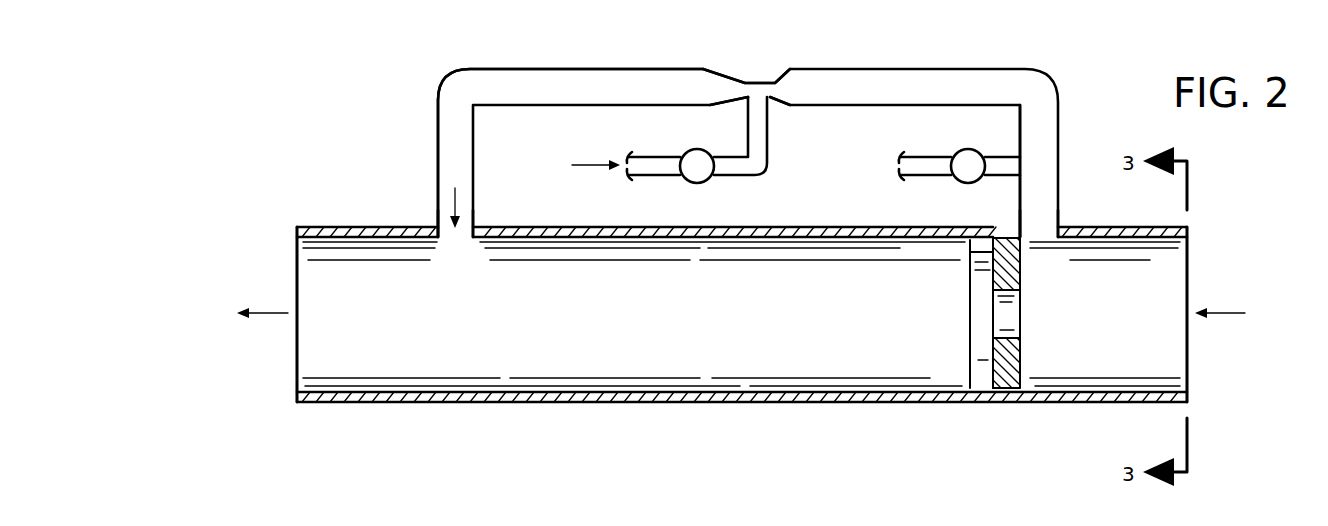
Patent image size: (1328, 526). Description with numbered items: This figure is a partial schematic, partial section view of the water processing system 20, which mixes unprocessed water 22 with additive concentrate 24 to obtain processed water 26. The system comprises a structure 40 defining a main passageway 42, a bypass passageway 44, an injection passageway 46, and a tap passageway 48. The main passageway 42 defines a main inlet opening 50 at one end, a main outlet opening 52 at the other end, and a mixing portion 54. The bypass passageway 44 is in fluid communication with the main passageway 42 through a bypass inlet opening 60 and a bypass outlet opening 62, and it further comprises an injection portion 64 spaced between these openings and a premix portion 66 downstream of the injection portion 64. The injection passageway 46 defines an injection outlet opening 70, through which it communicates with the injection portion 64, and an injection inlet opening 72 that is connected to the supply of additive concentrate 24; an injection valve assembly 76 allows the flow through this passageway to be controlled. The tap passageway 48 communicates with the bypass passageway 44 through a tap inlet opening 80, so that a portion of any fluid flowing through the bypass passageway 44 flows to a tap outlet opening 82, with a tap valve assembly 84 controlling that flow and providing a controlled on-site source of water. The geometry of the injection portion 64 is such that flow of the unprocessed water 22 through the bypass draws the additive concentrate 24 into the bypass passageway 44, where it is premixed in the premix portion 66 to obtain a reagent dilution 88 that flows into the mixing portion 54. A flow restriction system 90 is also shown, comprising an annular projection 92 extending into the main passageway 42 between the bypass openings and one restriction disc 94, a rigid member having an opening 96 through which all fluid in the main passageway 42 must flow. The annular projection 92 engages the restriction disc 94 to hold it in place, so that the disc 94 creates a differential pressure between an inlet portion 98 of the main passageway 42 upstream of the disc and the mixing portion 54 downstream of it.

The water processing system 20 is at (360, 123).
The unprocessed water 22 is at (1240, 313).
The additive concentrate 24 is at (578, 165).
The processed water 26 is at (268, 313).
The structure 40 is at (352, 213).
The main passageway 42 is at (838, 355).
The bypass passageway 44 is at (920, 85).
The injection passageway 46 is at (750, 172).
The tap passageway 48 is at (920, 177).
The main inlet opening 50 is at (1195, 265).
The main outlet opening 52 is at (292, 343).
The mixing portion 54 is at (550, 358).
The bypass inlet opening 60 is at (1048, 238).
The bypass outlet opening 62 is at (448, 240).
The injection portion 64 is at (740, 68).
The premix portion 66 is at (560, 85).
The injection outlet opening 70 is at (770, 112).
The injection inlet opening 72 is at (638, 172).
The injection valve assembly 76 is at (688, 150).
The tap inlet opening 80 is at (1020, 165).
The tap outlet opening 82 is at (905, 165).
The tap valve assembly 84 is at (970, 148).
The reagent dilution 88 is at (455, 200).
The flow restriction system 90 is at (1090, 305).
The annular projection 92 is at (965, 270).
The restriction disc 94 is at (1013, 350).
The opening 96 is at (1013, 315).
The inlet portion 98 is at (1113, 362).